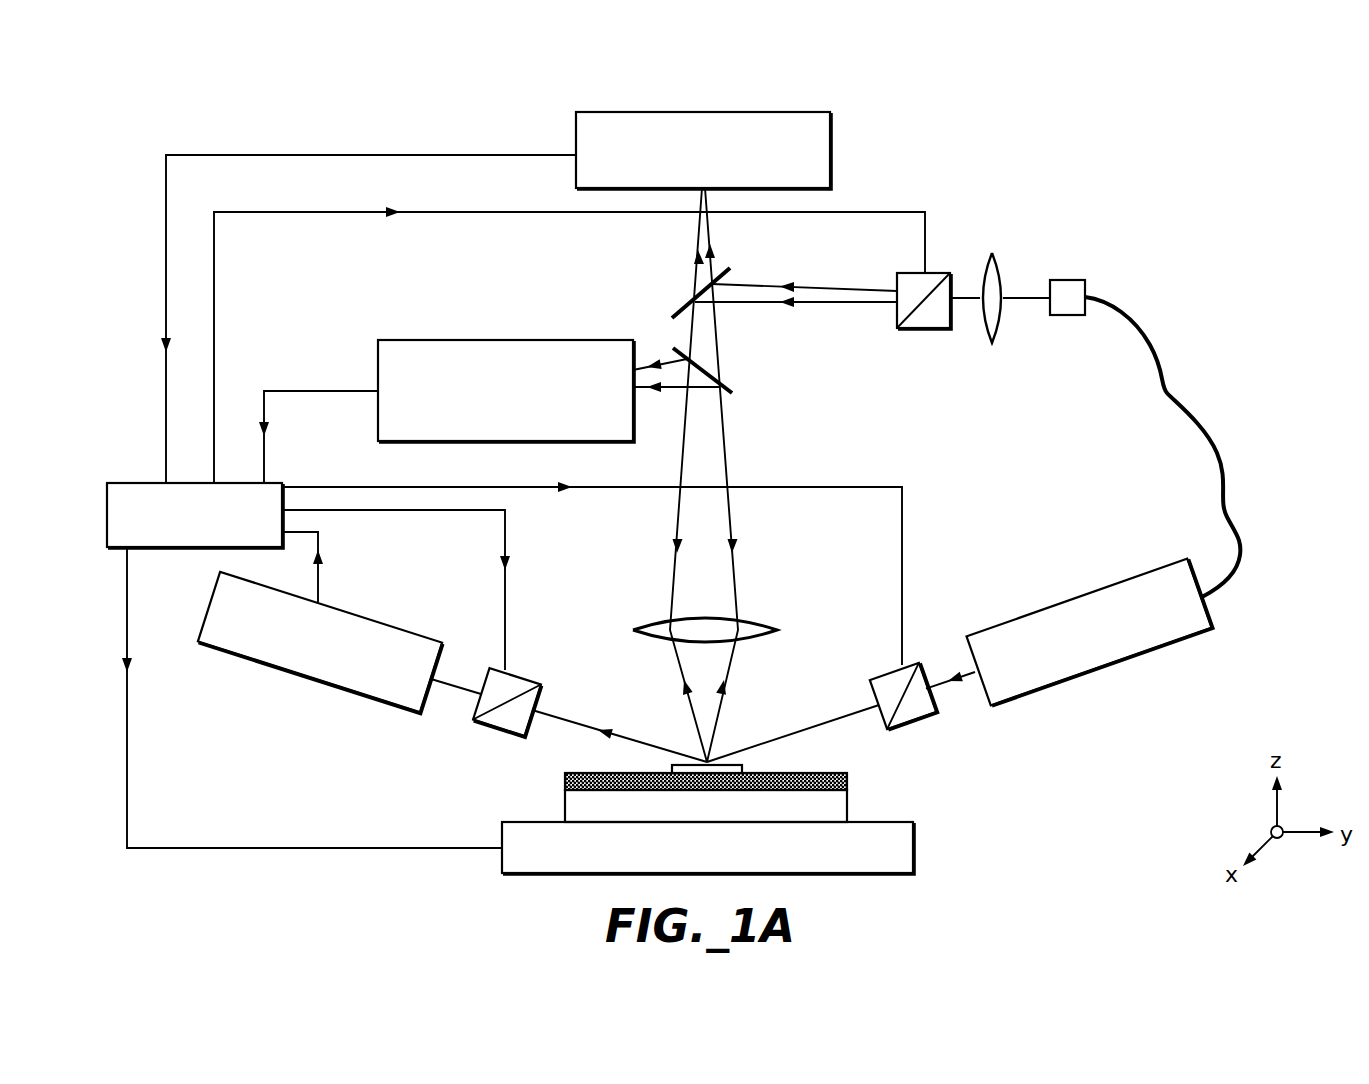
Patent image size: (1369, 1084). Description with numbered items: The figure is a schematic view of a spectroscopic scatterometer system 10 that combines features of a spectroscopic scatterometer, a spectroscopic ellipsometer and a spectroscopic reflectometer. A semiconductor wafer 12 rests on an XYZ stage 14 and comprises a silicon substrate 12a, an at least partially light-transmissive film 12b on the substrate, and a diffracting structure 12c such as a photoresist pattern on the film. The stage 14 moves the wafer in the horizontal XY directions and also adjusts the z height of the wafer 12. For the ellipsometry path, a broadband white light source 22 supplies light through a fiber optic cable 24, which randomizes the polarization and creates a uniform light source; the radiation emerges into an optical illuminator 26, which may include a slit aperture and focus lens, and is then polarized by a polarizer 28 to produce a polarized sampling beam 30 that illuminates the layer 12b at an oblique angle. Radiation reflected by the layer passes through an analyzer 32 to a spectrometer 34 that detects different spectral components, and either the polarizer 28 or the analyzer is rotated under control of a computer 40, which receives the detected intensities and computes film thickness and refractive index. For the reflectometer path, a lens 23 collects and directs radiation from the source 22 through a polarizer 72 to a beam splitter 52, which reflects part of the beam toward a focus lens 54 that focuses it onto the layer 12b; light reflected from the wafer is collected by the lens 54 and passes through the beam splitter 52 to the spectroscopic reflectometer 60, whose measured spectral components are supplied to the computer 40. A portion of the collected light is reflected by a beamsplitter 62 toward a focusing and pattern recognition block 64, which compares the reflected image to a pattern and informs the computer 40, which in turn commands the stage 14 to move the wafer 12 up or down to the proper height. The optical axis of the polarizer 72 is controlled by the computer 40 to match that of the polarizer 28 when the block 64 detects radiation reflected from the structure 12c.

The spectroscopic scatterometer system 10 is at (243, 95).
The wafer 12 is at (520, 796).
The silicon substrate 12a is at (850, 800).
The film 12b is at (850, 775).
The diffracting structure 12c is at (738, 763).
The XYZ stage 14 is at (915, 847).
The white light source 22 is at (1065, 280).
The lens 23 is at (1003, 262).
The fiber optic cable 24 is at (1165, 390).
The optical illuminator 26 is at (1212, 625).
The polarizer 28 is at (930, 718).
The polarized sampling beam 30 is at (833, 717).
The analyzer 32 is at (542, 695).
The spectrometer 34 is at (292, 675).
The computer 40 is at (280, 483).
The beam splitter 52 is at (727, 268).
The focus lens 54 is at (752, 622).
The spectroscopic reflectometer 60 is at (668, 112).
The beamsplitter 62 is at (730, 390).
The focusing and pattern recognition block 64 is at (520, 338).
The polarizer 72 is at (915, 332).